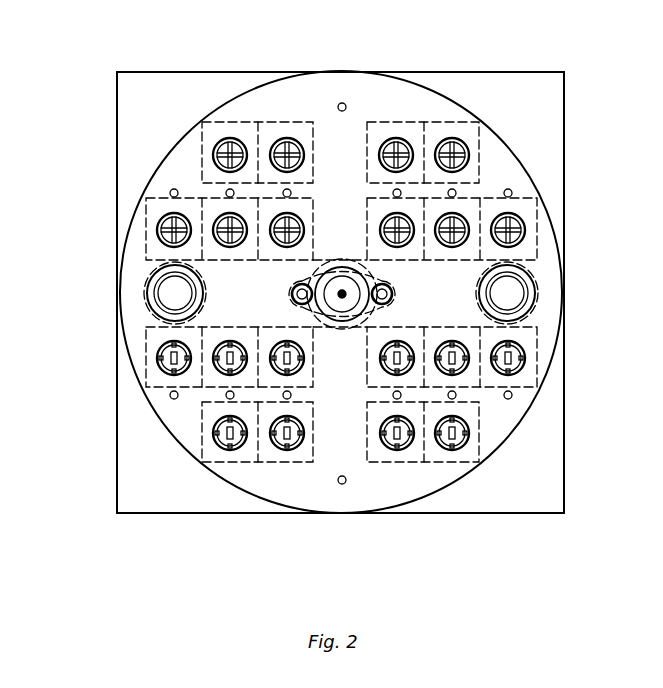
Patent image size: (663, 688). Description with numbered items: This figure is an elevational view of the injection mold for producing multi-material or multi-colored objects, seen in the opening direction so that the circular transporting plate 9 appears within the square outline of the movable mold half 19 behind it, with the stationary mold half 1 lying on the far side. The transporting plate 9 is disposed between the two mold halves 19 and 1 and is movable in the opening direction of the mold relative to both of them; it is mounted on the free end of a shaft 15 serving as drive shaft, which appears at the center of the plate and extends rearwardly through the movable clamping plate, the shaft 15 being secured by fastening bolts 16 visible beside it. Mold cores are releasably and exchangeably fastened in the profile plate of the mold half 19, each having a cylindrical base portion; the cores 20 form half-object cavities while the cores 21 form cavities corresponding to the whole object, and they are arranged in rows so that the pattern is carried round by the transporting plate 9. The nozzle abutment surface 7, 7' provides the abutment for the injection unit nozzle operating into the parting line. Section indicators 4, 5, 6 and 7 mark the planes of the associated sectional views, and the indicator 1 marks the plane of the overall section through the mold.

The stationary mold half 1 is at (342, 82).
The section line 4- 4 is at (124, 358).
The section line 5- 5 is at (556, 229).
The section line 6- 6 is at (230, 82).
The nozzle abutment surface 7 is at (254, 480).
The nozzle abutment surface 7' is at (400, 50).
The transporting plate 9 is at (425, 113).
The shaft 15 is at (348, 300).
The fastening bolt 16 is at (390, 289).
The movable mold half 19 is at (523, 112).
The mold core 20 is at (212, 420).
The mold core 21 is at (210, 167).